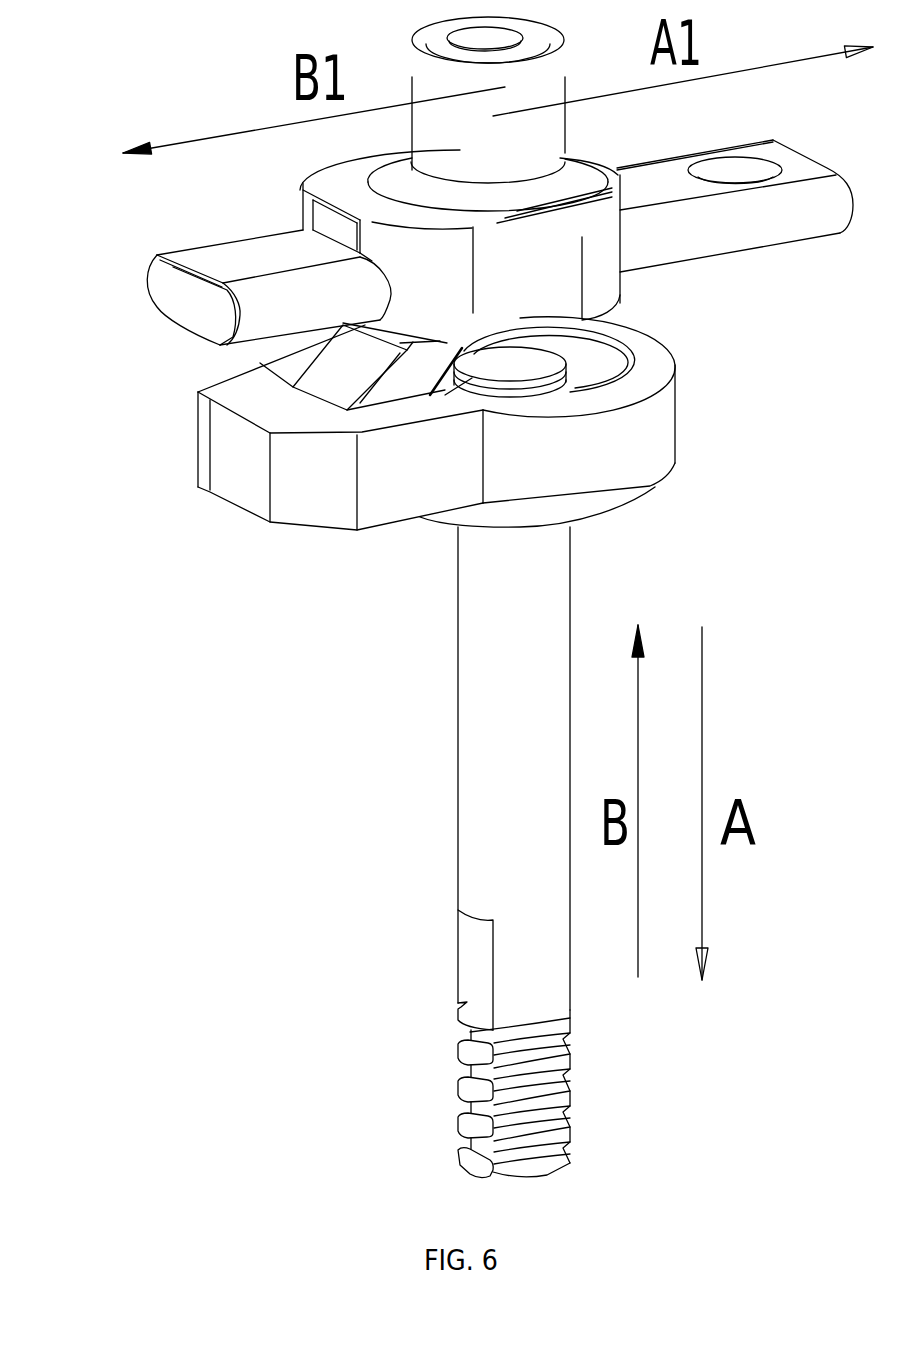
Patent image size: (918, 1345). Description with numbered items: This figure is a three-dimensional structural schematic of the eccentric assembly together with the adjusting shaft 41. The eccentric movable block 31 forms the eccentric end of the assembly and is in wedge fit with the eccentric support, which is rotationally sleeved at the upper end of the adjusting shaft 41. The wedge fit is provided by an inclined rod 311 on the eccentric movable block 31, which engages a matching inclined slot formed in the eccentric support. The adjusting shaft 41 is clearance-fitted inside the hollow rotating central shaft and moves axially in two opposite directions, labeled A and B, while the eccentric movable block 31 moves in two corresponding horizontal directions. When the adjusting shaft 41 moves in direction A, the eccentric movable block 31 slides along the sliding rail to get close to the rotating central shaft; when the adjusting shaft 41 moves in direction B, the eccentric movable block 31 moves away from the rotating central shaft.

The eccentric movable block 31 is at (738, 223).
The inclined rod 311 is at (357, 369).
The adjusting shaft 41 is at (485, 738).